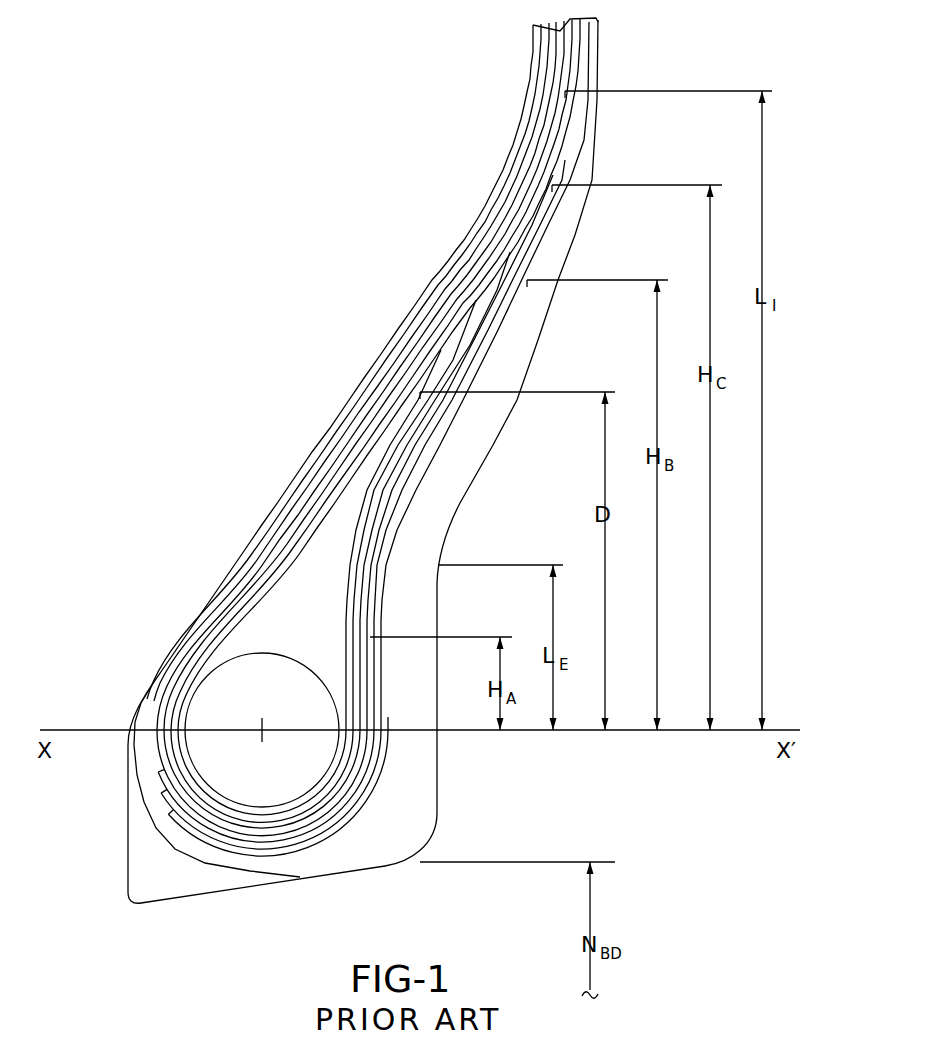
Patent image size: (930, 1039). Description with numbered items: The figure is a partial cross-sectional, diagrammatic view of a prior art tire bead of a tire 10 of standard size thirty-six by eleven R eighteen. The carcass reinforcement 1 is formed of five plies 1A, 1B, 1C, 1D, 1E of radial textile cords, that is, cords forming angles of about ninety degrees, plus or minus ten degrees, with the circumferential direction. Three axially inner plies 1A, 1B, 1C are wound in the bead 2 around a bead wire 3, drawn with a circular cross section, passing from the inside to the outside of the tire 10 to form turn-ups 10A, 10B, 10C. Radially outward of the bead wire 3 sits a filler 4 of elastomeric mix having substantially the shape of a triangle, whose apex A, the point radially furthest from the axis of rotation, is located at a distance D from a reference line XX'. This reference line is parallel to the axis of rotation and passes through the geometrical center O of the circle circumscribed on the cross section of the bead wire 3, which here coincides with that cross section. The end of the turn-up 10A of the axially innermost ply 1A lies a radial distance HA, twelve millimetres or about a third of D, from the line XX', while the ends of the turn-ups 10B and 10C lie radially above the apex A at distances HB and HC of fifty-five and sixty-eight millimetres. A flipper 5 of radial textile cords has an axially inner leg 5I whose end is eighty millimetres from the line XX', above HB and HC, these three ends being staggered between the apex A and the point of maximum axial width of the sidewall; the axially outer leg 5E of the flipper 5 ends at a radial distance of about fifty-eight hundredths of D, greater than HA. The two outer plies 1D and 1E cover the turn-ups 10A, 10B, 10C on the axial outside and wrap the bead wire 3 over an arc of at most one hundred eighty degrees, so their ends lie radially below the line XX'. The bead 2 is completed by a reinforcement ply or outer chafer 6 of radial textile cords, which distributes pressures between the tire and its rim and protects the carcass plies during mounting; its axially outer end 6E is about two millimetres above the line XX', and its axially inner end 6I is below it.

The carcass reinforcement 1 is at (567, 67).
The inner carcass ply 1A is at (535, 140).
The inner carcass ply 1B is at (520, 213).
The inner carcass ply 1C is at (497, 270).
The outer carcass ply 1D is at (550, 222).
The outer carcass ply 1E is at (580, 127).
The bead 2 is at (300, 565).
The bead wire 3 is at (220, 713).
The filler 4 is at (297, 618).
The flipper 5 is at (243, 632).
The axially inner leg of flipper 5I is at (355, 475).
The axially outer leg of flipper 5E is at (350, 548).
The reinforcement ply or outer chafer 6 is at (257, 857).
The axially inner end of chafer 6I is at (180, 828).
The axially outer end of chafer 6E is at (388, 718).
The tire 10 is at (238, 322).
The turn-up of inner carcass ply 10A is at (357, 778).
The turn-up of inner carcass ply 10B is at (485, 327).
The turn-up of inner carcass ply 10C is at (383, 484).
The apex of filler A is at (422, 390).
The geometrical center O is at (273, 786).